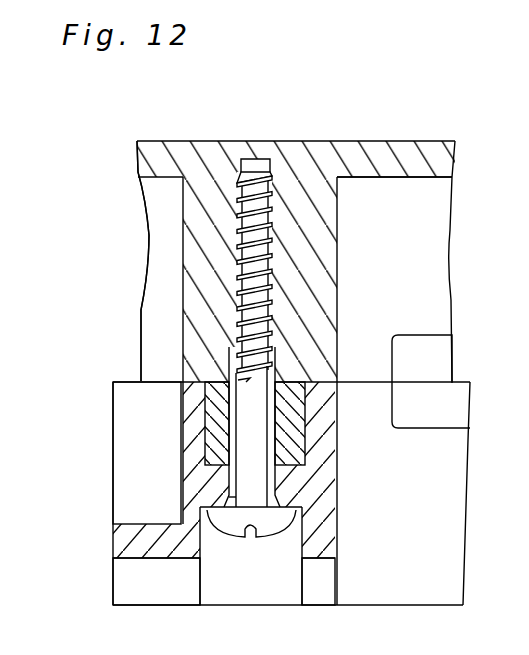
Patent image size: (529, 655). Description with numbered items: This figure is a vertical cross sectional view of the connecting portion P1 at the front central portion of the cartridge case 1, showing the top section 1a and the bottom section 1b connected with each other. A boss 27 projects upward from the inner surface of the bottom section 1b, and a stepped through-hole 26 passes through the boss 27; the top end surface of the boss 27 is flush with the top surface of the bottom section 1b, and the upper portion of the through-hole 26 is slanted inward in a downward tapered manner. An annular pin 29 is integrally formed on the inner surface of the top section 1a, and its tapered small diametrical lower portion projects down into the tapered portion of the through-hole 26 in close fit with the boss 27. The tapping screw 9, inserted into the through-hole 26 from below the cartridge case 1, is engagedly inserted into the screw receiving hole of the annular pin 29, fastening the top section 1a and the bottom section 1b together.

The cartridge case 1 is at (157, 141).
The top section 1a is at (392, 141).
The bottom section 1b is at (148, 545).
The tapping screw 9 is at (300, 257).
The stepped through-hole 26 is at (216, 419).
The boss 27 is at (192, 452).
The annular pin 29 is at (300, 440).
The connecting portion P1 is at (181, 310).